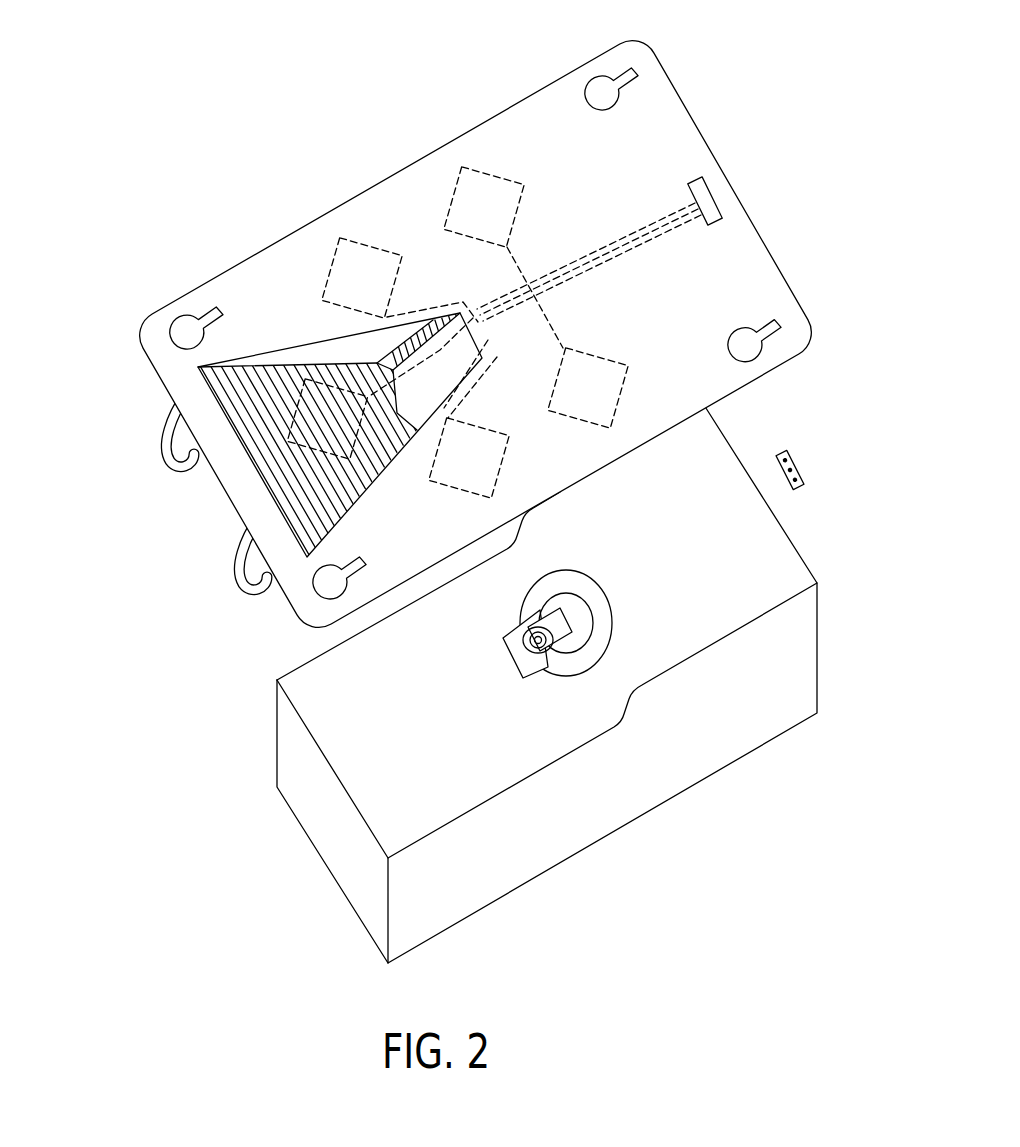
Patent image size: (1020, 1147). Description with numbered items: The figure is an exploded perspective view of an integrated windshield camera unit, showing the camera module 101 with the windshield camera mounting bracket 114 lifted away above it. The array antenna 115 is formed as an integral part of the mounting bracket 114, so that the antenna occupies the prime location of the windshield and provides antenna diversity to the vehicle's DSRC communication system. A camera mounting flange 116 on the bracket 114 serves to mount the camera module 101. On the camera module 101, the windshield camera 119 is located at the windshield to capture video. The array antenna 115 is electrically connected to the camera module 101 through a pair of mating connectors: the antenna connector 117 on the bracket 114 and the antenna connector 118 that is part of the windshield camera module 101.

The camera module 101 is at (328, 813).
The camera mounting bracket 114 is at (152, 368).
The array antenna 115 is at (332, 269).
The camera mounting flange 116 is at (243, 576).
The antenna connector 117 is at (713, 207).
The antenna connector 118 is at (757, 490).
The windshield camera 119 is at (578, 605).